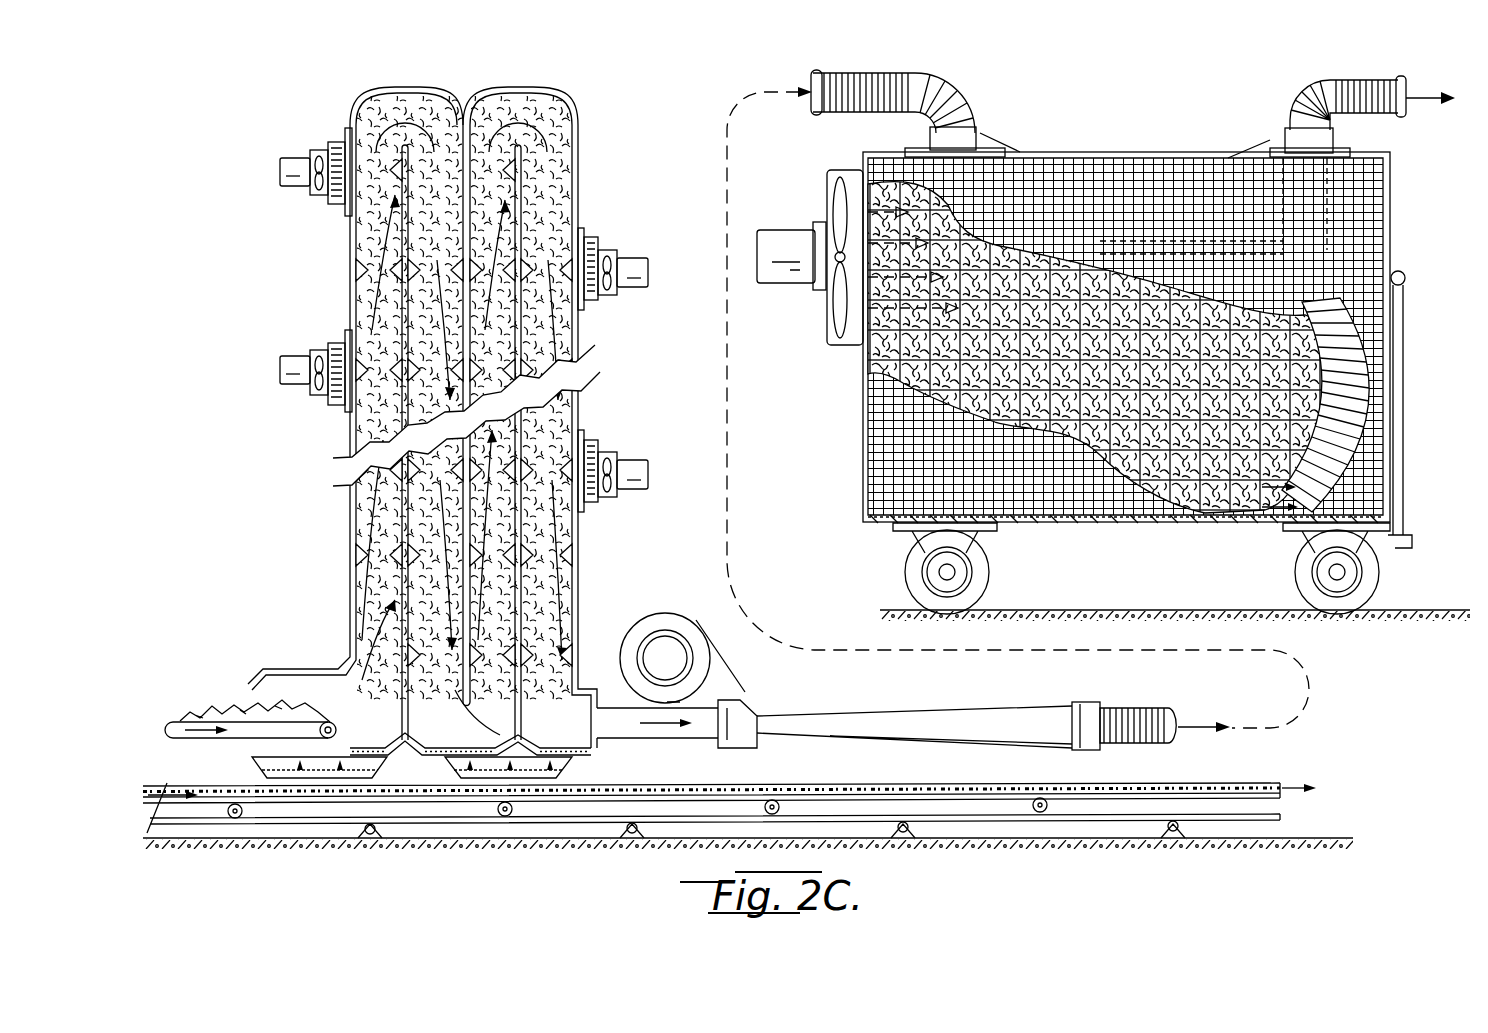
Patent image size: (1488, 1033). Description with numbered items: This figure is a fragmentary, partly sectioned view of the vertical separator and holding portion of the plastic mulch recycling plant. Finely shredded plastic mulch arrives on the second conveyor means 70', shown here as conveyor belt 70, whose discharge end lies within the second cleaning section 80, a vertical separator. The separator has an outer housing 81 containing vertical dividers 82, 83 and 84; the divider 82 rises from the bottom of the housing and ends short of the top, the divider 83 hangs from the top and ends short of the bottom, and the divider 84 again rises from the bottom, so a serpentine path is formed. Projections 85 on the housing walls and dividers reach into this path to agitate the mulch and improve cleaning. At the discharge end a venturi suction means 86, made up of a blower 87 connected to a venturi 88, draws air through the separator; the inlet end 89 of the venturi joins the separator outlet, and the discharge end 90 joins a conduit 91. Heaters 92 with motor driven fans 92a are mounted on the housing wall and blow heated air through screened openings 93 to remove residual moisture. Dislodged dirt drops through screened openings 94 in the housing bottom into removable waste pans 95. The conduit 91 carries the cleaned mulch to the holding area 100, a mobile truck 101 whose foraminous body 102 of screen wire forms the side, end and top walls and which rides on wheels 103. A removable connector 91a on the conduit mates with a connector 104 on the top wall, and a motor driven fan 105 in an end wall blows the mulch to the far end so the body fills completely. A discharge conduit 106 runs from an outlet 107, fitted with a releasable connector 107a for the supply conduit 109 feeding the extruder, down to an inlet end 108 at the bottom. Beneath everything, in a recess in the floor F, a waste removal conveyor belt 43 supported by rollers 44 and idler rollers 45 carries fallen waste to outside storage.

The second conveyor means 70' is at (244, 696).
The conveyor feed 70 is at (244, 696).
The second cleaning section 80 is at (447, 426).
The outer housing 81 is at (348, 528).
The vertical divider 82 is at (395, 150).
The vertical divider 83 is at (470, 132).
The divider 84 is at (500, 137).
The projections 85 is at (506, 172).
The venturi suction means 86 is at (670, 612).
The blower 87 is at (698, 650).
The venturi 88 is at (760, 708).
The inlet end 89 is at (685, 742).
The discharge end 90 is at (965, 712).
The conduit 91 is at (1143, 712).
The removable connector 91a is at (950, 130).
The heaters 92 is at (334, 205).
The motor driven fans 92a is at (300, 186).
The screened openings 93 is at (352, 205).
The screened openings 94 is at (398, 750).
The removable waste pans 95 is at (258, 764).
The accumulating or holding area 100 is at (1115, 344).
The mobile truck 101 is at (865, 490).
The foraminous body 102 is at (866, 405).
The wheels 103 is at (906, 574).
The connector 104 is at (978, 145).
The motor driven fan 105 is at (828, 312).
The discharge conduit 106 is at (1404, 348).
The outlet 107 is at (1332, 142).
The releasable connector 107a is at (1286, 134).
The inlet end 108 is at (1298, 500).
The supply conduit 109 is at (1300, 108).
The waste removal conveyor belt 43 is at (1262, 785).
The rollers 44 is at (1036, 800).
The idler rollers 45 is at (1170, 830).
The floor F is at (1230, 855).